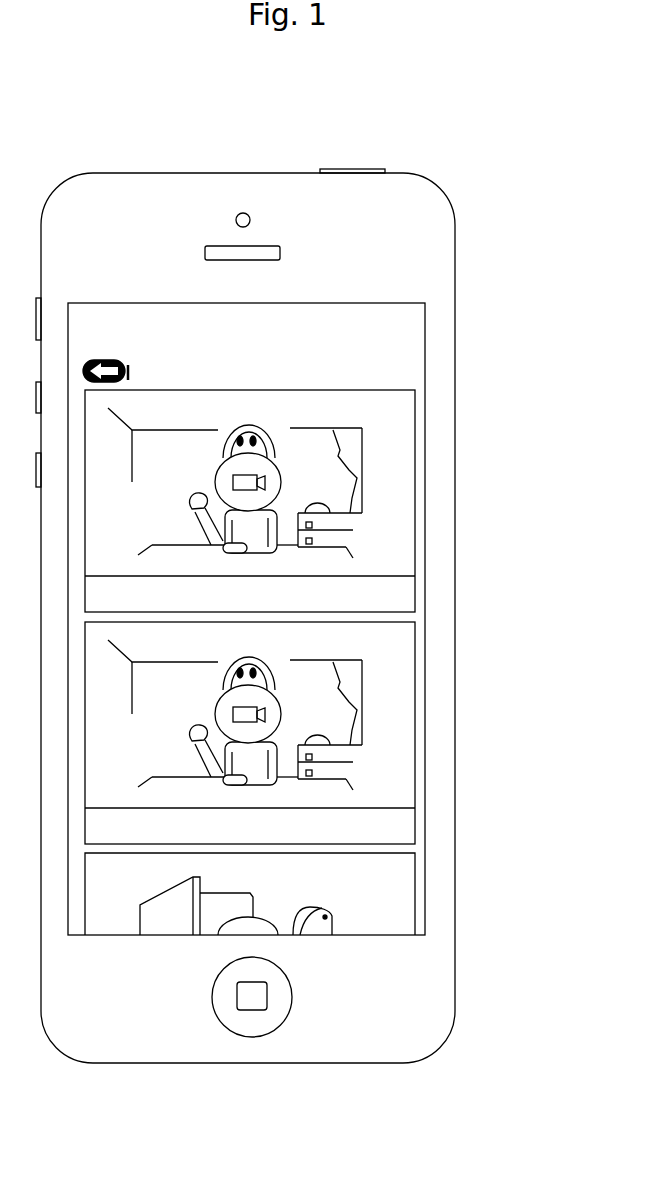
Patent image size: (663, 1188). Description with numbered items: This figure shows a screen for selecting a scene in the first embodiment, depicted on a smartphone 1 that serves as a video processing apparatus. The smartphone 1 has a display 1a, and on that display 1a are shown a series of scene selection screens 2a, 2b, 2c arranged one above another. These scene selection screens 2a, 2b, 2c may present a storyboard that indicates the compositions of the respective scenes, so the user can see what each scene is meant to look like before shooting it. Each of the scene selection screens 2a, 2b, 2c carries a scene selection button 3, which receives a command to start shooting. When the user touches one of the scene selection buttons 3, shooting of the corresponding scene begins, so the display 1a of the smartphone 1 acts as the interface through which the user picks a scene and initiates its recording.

The smartphone 1 is at (102, 173).
The display 1a is at (385, 303).
The scene selection screen 2a is at (385, 390).
The scene selection screen 2b is at (392, 620).
The scene selection screen 2c is at (385, 852).
The scene selection button 3 is at (278, 457).